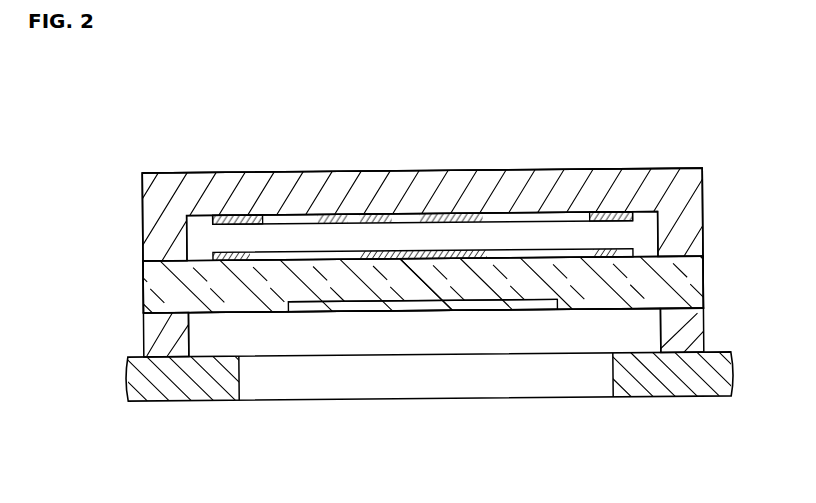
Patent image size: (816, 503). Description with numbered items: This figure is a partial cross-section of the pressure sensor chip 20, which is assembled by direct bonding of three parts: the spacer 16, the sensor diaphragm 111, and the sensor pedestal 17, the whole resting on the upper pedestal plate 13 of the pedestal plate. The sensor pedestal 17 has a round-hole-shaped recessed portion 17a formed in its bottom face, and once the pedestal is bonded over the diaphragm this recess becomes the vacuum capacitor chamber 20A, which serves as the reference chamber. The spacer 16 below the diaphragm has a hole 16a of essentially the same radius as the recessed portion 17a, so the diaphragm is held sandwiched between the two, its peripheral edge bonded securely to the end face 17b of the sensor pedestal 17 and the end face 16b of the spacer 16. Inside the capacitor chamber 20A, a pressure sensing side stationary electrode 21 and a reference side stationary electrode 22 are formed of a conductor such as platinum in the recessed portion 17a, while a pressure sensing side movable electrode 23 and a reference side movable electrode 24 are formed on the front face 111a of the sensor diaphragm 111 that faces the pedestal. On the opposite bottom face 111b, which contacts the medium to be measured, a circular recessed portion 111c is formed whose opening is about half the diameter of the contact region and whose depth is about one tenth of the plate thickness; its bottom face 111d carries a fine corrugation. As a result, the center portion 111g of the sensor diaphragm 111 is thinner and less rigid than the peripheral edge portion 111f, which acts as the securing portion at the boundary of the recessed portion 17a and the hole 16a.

The upper pedestal plate 13 is at (695, 388).
The spacer 16 is at (168, 352).
The hole 16a is at (190, 335).
The end face 16b is at (170, 305).
The sensor pedestal 17 is at (190, 180).
The recessed portion 17a is at (205, 213).
The end face 17b is at (162, 262).
The pressure sensor chip 20 is at (540, 174).
The capacitor chamber 20A is at (345, 241).
The pressure sensing side stationary electrode 21 is at (435, 226).
The reference side stationary electrode 22 is at (248, 226).
The pressure sensing side movable electrode 23 is at (466, 214).
The reference side movable electrode 24 is at (252, 252).
The sensor diaphragm 111 is at (593, 287).
The front face 111a is at (648, 254).
The bottom face 111b is at (262, 313).
The recessed portion 111c is at (328, 313).
The bottom face of recessed portion 111d is at (405, 304).
The peripheral edge portion 111f is at (200, 292).
The center portion 111g is at (462, 288).